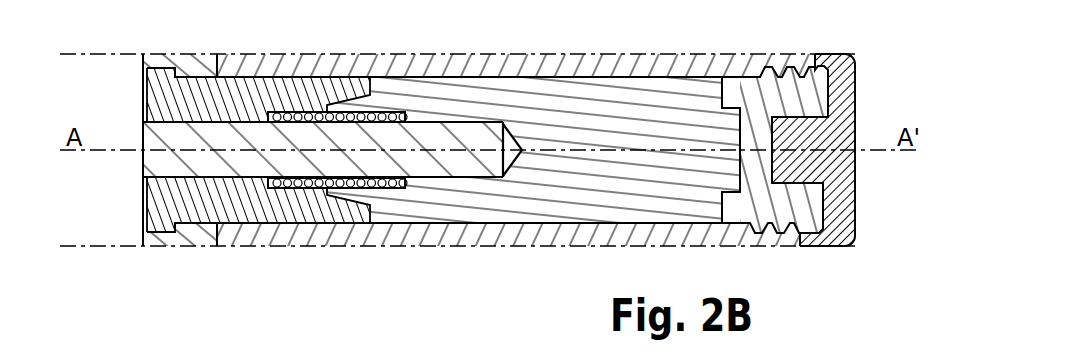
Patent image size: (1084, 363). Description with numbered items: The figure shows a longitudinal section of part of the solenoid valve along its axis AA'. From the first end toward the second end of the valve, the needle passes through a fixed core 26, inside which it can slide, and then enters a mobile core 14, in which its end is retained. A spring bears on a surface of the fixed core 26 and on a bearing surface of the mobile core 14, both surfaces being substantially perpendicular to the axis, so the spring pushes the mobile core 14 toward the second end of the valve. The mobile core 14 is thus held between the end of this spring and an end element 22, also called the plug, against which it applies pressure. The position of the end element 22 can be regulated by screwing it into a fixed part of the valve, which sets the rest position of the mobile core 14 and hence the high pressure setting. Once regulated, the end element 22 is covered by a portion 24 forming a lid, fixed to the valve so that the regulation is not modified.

The mobile core 14 is at (569, 197).
The end element 22 is at (801, 100).
The portion forming a lid 24 is at (842, 215).
The fixed core 26 is at (287, 203).